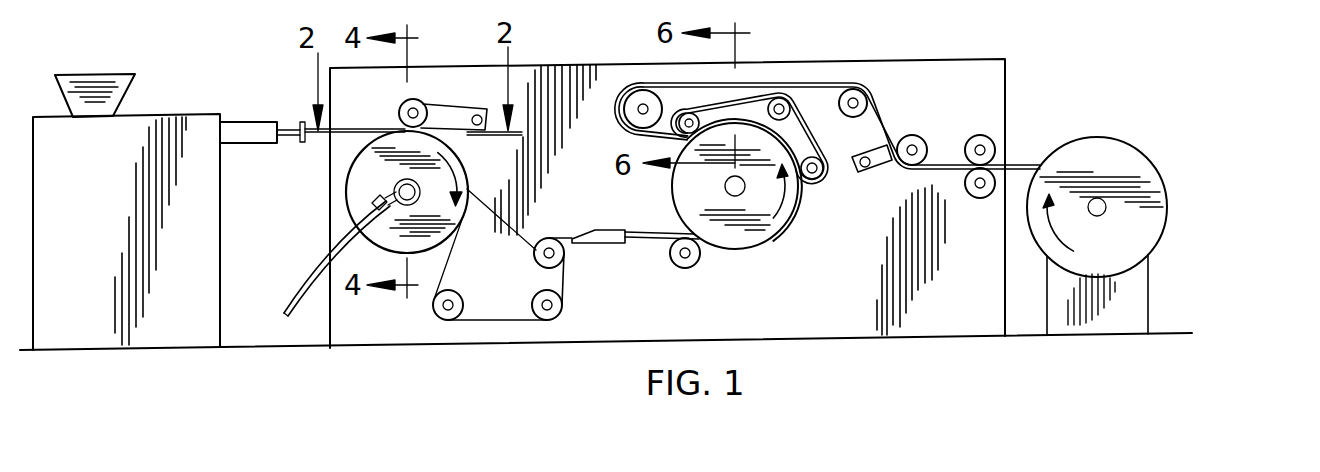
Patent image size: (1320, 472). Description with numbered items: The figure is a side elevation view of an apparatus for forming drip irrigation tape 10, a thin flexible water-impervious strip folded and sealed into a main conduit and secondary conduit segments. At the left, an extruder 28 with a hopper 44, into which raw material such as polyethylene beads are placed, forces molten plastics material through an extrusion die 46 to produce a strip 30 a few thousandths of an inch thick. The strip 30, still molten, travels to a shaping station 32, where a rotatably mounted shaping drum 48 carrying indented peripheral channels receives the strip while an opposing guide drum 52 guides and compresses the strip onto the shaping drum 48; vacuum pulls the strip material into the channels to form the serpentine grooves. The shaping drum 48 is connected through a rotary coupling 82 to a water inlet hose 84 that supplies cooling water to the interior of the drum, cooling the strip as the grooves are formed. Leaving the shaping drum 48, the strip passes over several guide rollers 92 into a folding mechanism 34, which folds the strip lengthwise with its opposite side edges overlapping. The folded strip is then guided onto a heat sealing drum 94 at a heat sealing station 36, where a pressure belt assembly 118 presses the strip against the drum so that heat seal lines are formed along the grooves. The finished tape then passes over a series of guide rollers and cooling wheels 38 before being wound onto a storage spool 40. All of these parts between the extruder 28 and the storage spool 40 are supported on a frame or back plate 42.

The drip irrigation tape 10 is at (1020, 160).
The extruder 28 is at (189, 115).
The strip 30 is at (353, 127).
The shaping station 32 is at (383, 223).
The folding mechanism 34 is at (606, 223).
The heat sealing station 36 is at (738, 193).
The guide rollers and cooling wheels 38 is at (870, 103).
The storage spool 40 is at (1147, 173).
The frame or back plate 42 is at (913, 80).
The hopper 44 is at (112, 84).
The extrusion die 46 is at (283, 140).
The shaping drum 48 is at (455, 162).
The guide drum 52 is at (411, 100).
The rotary coupling 82 is at (384, 196).
The water inlet hose 84 is at (297, 283).
The guide rollers 92 is at (452, 292).
The heat sealing drum 94 is at (683, 188).
The pressure belt assembly 118 is at (797, 149).